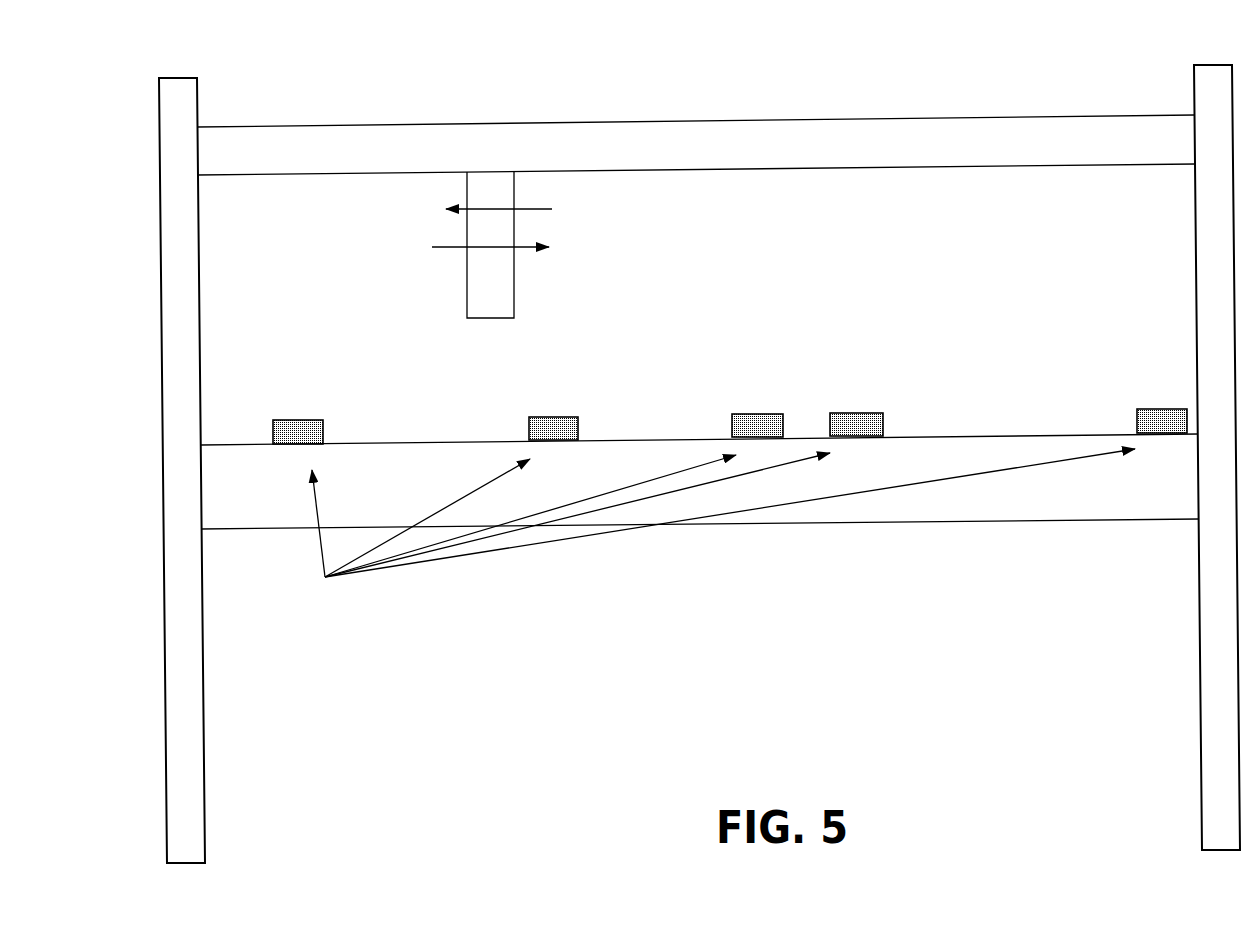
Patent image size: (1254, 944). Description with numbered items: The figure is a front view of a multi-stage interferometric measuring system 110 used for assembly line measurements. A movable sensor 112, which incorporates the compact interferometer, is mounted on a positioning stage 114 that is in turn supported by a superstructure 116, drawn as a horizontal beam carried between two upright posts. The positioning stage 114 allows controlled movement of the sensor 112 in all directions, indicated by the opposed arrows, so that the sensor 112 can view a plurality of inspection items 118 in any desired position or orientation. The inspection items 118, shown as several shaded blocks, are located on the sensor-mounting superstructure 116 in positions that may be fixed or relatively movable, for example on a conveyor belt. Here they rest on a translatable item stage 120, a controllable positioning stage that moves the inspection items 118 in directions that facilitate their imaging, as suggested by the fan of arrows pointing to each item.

The multi-stage interferometric measuring system 110 is at (356, 86).
The movable sensor 112 is at (497, 292).
The positioning stage 114 is at (819, 152).
The superstructure 116 is at (1218, 317).
The inspection items 118 is at (730, 511).
The translatable item stage 120 is at (1028, 495).